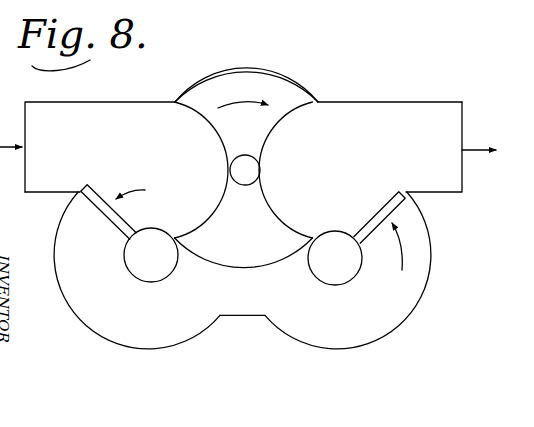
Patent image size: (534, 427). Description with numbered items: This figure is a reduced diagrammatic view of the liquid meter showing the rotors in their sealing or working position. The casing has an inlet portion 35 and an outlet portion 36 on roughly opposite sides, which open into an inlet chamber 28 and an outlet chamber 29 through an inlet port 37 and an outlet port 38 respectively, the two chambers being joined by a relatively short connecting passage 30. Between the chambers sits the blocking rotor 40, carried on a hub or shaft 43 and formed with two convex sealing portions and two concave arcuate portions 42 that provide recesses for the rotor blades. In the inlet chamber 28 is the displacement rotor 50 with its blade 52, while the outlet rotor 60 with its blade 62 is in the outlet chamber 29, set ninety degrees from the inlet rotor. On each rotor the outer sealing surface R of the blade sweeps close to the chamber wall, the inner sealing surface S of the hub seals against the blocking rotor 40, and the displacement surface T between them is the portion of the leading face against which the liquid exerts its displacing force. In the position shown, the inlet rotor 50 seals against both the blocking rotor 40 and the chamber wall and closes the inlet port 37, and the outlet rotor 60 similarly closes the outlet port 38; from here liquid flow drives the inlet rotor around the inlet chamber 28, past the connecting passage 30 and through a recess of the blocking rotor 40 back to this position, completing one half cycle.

The inlet chamber 28 is at (102, 315).
The outlet chamber 29 is at (348, 330).
The connecting passage 30 is at (245, 293).
The inlet portion 35 is at (66, 89).
The outlet portion 36 is at (443, 133).
The inlet port 37 is at (116, 163).
The outlet port 38 is at (378, 165).
The blocking rotor 40 is at (280, 209).
The concave arcuate portions 42 is at (278, 128).
The hub or shaft 43 is at (245, 175).
The displacement rotor 50 is at (157, 285).
The blade 52 is at (110, 216).
The outlet rotor 60 is at (344, 288).
The blade 62 is at (380, 210).
The outer sealing surface R is at (82, 188).
The displacement surface T is at (118, 234).
The inner sealing surface S is at (173, 267).